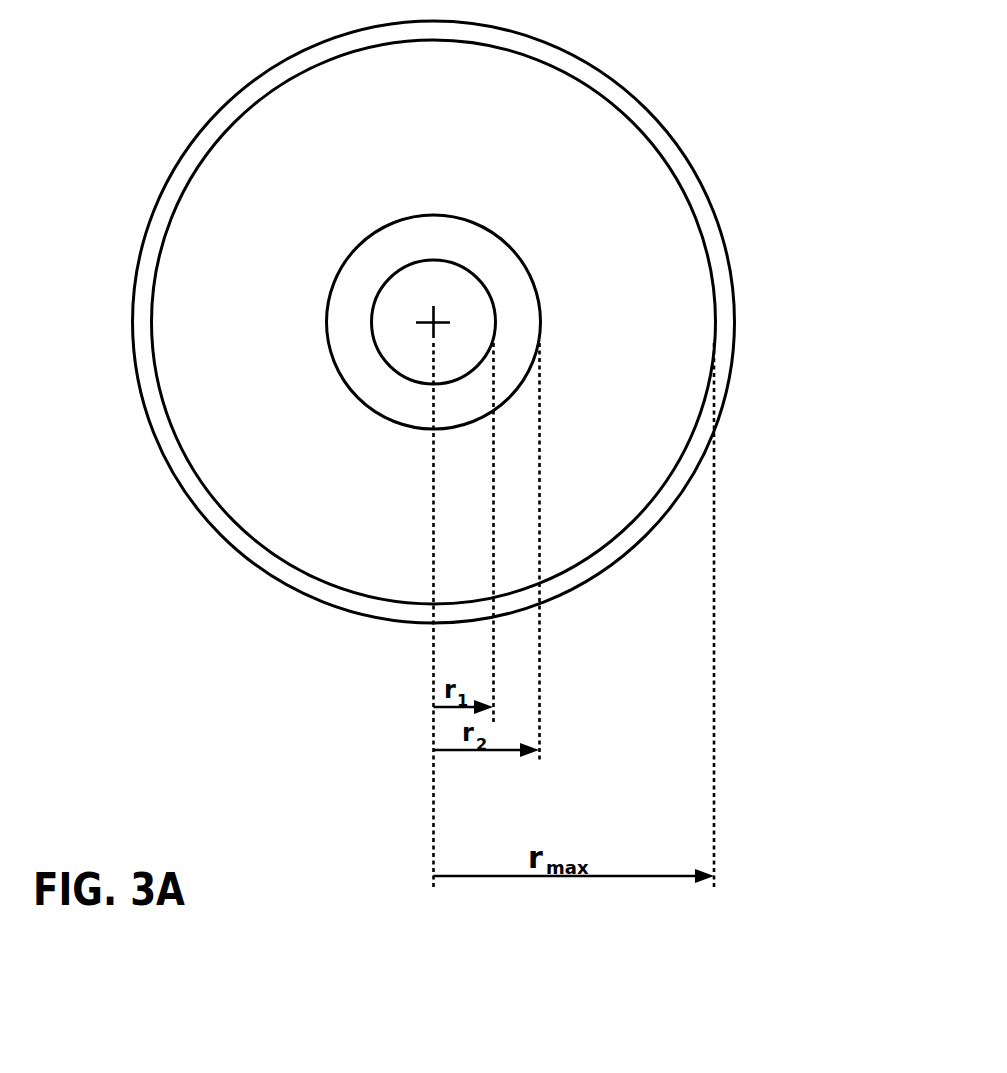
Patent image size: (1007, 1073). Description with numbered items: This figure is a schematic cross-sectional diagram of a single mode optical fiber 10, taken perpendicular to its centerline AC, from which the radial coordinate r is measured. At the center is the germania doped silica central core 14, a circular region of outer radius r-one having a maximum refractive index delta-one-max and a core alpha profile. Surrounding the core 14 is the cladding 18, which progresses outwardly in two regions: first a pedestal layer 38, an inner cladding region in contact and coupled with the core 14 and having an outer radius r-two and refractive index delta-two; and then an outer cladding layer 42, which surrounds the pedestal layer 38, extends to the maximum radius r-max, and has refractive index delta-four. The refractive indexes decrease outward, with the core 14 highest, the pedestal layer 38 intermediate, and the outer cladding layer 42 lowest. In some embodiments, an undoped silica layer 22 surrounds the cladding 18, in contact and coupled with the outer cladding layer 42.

The single mode optical fiber 10 is at (174, 95).
The germania doped silica central core 14 is at (413, 296).
The cladding 18 is at (803, 13).
The undoped silica layer 22 is at (143, 360).
The pedestal layer 38 is at (496, 265).
The outer cladding layer 42 is at (623, 240).
The centerline AC is at (418, 323).